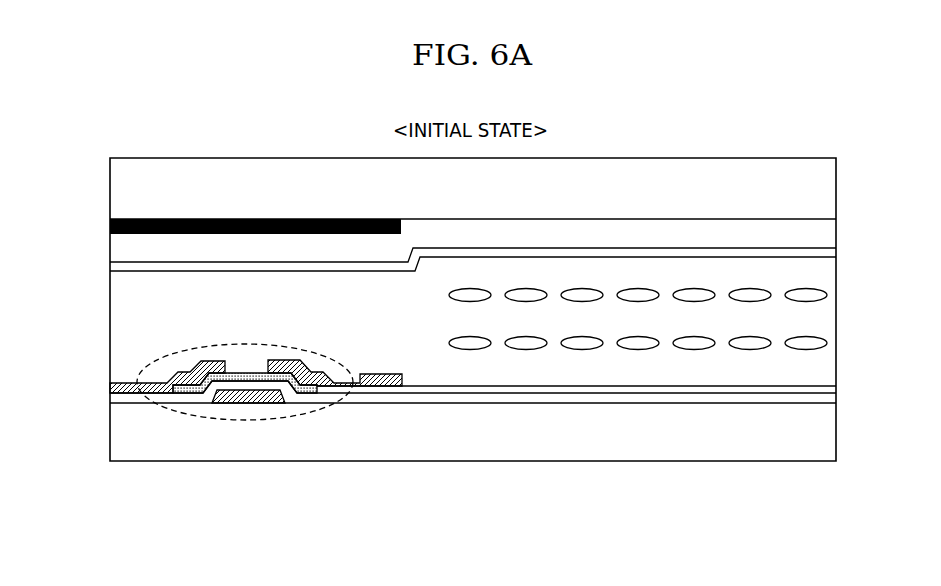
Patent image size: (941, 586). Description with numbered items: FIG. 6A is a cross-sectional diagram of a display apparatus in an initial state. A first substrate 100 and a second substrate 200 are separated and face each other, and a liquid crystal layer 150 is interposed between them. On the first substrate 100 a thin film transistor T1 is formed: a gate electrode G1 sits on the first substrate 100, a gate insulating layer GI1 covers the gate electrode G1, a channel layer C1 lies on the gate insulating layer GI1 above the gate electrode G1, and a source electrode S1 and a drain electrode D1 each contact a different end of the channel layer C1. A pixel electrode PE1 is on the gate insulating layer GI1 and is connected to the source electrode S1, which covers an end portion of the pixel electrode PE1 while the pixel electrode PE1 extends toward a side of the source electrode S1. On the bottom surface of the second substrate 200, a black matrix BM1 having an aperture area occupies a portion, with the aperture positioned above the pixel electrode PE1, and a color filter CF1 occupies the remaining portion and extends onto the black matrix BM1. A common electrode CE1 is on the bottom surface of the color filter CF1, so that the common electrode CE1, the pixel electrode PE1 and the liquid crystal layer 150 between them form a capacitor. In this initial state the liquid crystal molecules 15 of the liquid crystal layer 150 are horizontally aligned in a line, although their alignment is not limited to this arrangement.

The second substrate 200 is at (836, 188).
The first substrate 100 is at (836, 433).
The liquid crystal layer 150 is at (836, 318).
The liquid crystal molecules 15 is at (827, 343).
The black matrix BM1 is at (110, 224).
The color filter CF1 is at (836, 233).
The common electrode CE1 is at (836, 257).
The pixel electrode PE1 is at (836, 386).
The gate insulating layer GI1 is at (836, 397).
The gate electrode G1 is at (245, 403).
The channel layer C1 is at (187, 387).
The drain electrode D1 is at (128, 393).
The source electrode S1 is at (343, 390).
The thin film transistor T1 is at (158, 358).